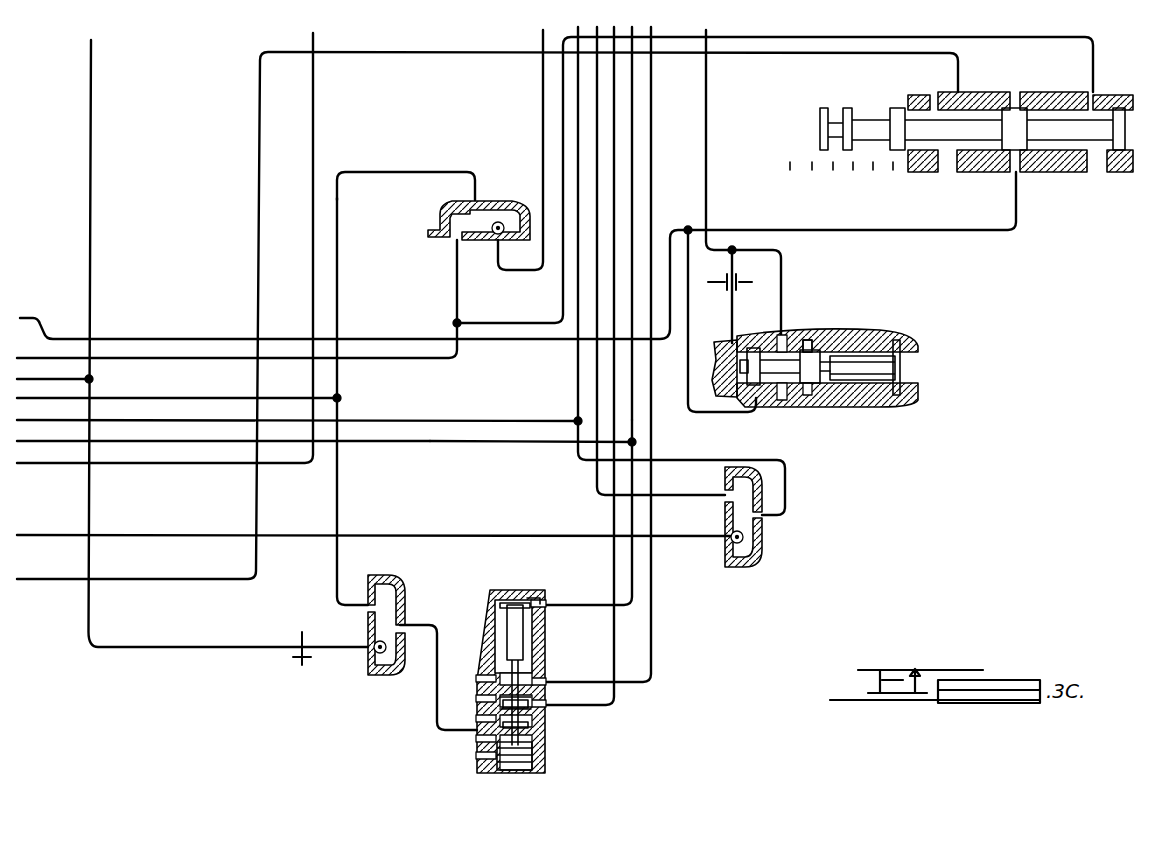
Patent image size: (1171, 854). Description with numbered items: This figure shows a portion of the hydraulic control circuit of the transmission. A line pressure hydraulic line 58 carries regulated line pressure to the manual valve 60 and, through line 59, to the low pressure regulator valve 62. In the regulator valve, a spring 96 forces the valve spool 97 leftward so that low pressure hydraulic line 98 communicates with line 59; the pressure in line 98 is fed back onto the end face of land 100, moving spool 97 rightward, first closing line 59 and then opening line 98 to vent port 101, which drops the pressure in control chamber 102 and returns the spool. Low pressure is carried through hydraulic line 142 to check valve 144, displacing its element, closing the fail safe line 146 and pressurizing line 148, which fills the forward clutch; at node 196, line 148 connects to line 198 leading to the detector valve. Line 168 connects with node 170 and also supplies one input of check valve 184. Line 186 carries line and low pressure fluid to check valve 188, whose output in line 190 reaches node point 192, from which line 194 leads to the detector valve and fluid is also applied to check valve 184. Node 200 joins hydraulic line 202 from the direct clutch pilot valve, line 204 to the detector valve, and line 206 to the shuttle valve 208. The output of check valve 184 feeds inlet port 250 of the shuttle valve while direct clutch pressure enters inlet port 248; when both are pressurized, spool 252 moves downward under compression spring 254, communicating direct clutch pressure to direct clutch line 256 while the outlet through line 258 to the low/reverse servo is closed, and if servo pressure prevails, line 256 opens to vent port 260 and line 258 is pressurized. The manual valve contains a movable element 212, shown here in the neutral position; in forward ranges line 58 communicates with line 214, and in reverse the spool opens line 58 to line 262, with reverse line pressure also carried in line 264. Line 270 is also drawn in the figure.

The line pressure hydraulic line 58 is at (928, 262).
The line 59 is at (686, 392).
The manual valve 60 is at (1035, 80).
The low pressure regulator valve 62 is at (915, 344).
The spring 96 is at (868, 390).
The valve spool 97 is at (868, 375).
The low pressure hydraulic line 98 is at (706, 98).
The land 100 is at (760, 388).
The vent port 101 is at (808, 345).
The control chamber 102 is at (722, 352).
The hydraulic line 142 is at (678, 482).
The check valve 144 is at (762, 567).
The fail safe line 146 is at (545, 530).
The line 148 is at (810, 492).
The line 168 is at (89, 523).
The node 170 is at (93, 379).
The check valve 184 is at (357, 675).
The line 186 is at (543, 90).
The check valve 188 is at (414, 238).
The line 190 is at (337, 190).
The node point 192 is at (341, 398).
The line 194 is at (190, 380).
The node 196 is at (574, 421).
The line 198 is at (450, 420).
The node 200 is at (636, 442).
The hydraulic line 202 is at (637, 104).
The line 204 is at (428, 443).
The line 206 is at (633, 597).
The shuttle valve 208 is at (560, 760).
The manual valve element 212 is at (918, 138).
The line 214 is at (750, 53).
The inlet port 248 is at (536, 598).
The inlet port 250 is at (478, 742).
The spool 252 is at (505, 620).
The compression spring 254 is at (505, 641).
The direct clutch line 256 is at (652, 626).
The line 258 is at (640, 706).
The vent port 260 is at (547, 698).
The line 262 is at (1120, 54).
The line 264 is at (395, 352).
The R,L/R solenoid passage 270 is at (338, 502).